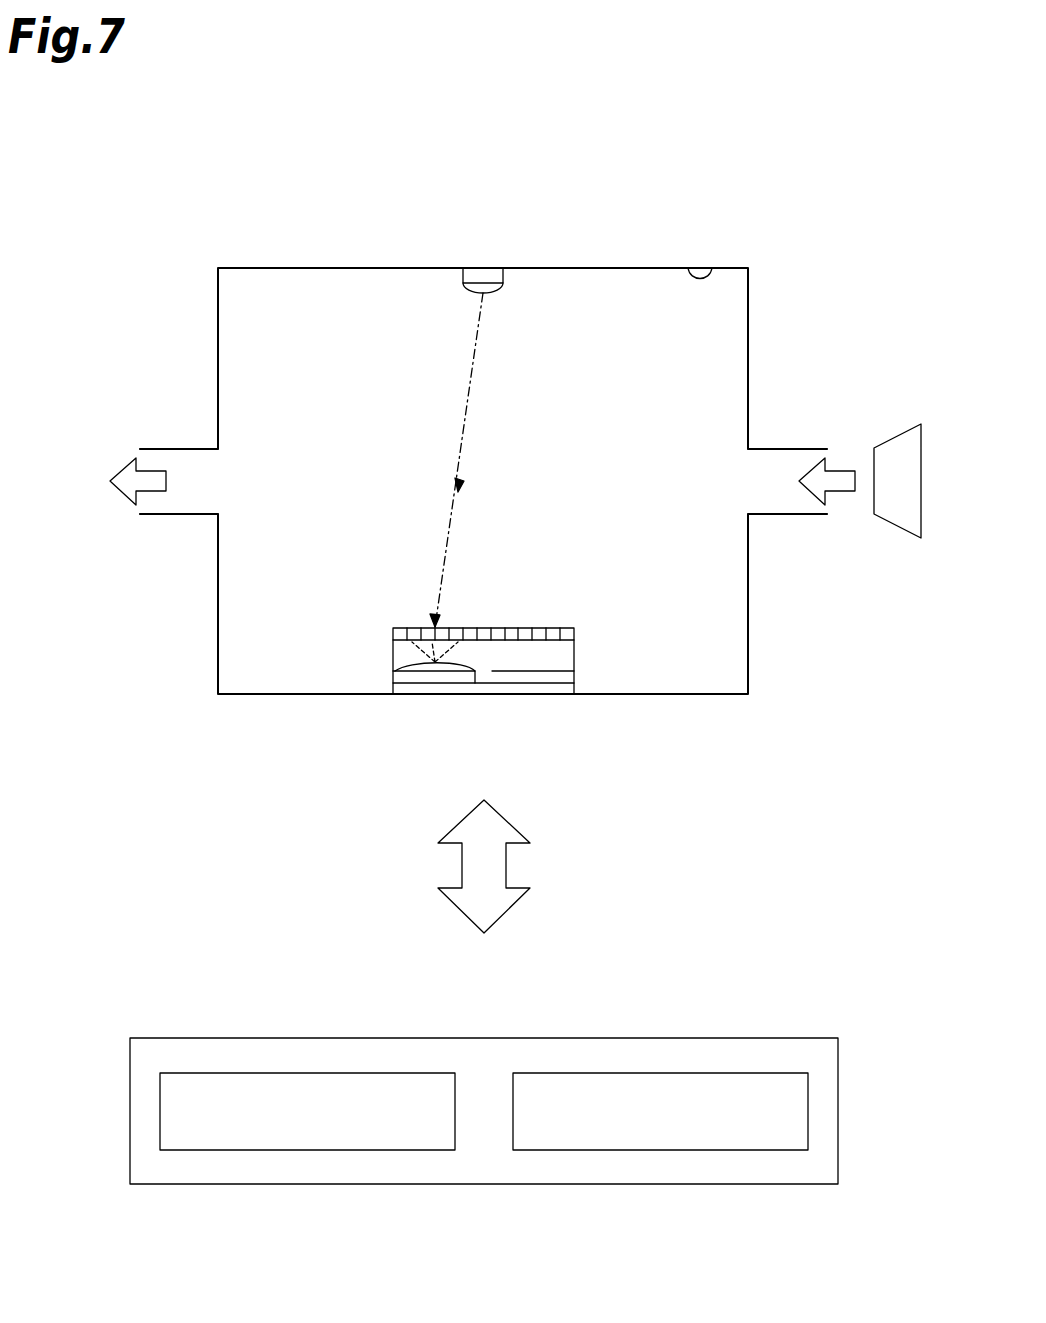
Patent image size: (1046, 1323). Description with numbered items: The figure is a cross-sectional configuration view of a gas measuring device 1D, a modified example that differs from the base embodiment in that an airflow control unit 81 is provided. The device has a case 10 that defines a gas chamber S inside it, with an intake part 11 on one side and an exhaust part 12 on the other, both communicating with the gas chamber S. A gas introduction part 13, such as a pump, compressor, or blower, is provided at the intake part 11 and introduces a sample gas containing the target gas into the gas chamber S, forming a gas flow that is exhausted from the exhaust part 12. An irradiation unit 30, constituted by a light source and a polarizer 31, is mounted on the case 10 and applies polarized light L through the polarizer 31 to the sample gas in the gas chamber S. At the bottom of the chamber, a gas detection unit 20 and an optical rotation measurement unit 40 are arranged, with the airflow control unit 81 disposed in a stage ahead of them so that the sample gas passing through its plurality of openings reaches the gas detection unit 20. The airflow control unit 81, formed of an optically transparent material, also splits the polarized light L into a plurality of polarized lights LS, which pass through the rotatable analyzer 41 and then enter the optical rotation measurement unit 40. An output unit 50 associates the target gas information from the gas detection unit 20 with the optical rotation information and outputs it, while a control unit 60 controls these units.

The gas measuring device 1D is at (743, 184).
The case 10 is at (620, 268).
The gas chamber S is at (705, 268).
The intake part 11 is at (786, 449).
The exhaust part 12 is at (162, 449).
The gas introduction part 13 is at (893, 446).
The irradiation unit 30 is at (512, 277).
The polarizer 31 is at (470, 297).
The polarized light L is at (470, 365).
The polarized lights LS is at (406, 649).
The gas detection unit 20 is at (576, 675).
The airflow control unit 81 is at (577, 627).
The optical rotation measurement unit 40 is at (396, 676).
The analyzer 41 is at (392, 657).
The output unit 50 is at (397, 1151).
The control unit 60 is at (757, 1151).